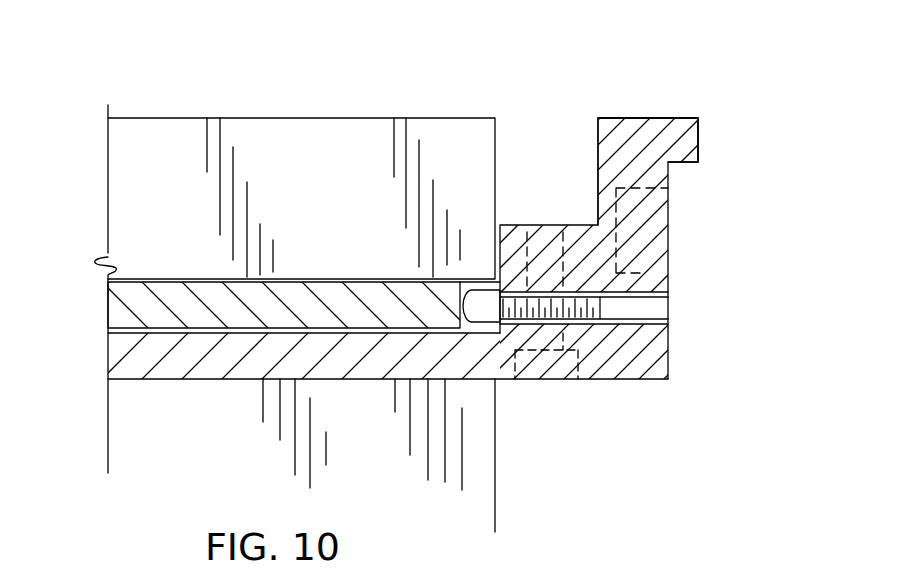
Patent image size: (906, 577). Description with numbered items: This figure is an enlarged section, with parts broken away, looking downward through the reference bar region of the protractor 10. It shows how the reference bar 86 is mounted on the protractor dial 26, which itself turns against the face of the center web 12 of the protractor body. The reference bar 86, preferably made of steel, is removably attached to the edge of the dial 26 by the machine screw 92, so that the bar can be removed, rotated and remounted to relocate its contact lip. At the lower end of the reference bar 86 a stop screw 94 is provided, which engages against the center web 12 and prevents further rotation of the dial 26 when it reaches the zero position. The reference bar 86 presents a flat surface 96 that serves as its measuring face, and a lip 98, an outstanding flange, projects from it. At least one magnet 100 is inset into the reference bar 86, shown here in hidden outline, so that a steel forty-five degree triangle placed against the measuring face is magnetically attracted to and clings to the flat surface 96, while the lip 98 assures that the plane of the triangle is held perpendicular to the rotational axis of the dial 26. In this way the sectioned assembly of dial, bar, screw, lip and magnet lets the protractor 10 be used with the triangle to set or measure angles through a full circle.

The protractor 10 is at (547, 105).
The center web 12 is at (108, 310).
The protractor dial 26 is at (108, 345).
The reference bar 86 is at (699, 128).
The machine screw 92 is at (525, 380).
The stop screw 94 is at (610, 308).
The flat surface 96 is at (670, 242).
The lip 98 is at (670, 165).
The magnet 100 is at (672, 222).